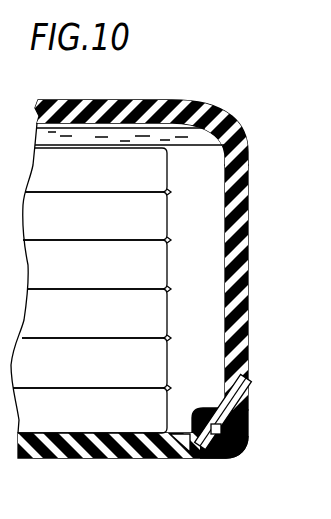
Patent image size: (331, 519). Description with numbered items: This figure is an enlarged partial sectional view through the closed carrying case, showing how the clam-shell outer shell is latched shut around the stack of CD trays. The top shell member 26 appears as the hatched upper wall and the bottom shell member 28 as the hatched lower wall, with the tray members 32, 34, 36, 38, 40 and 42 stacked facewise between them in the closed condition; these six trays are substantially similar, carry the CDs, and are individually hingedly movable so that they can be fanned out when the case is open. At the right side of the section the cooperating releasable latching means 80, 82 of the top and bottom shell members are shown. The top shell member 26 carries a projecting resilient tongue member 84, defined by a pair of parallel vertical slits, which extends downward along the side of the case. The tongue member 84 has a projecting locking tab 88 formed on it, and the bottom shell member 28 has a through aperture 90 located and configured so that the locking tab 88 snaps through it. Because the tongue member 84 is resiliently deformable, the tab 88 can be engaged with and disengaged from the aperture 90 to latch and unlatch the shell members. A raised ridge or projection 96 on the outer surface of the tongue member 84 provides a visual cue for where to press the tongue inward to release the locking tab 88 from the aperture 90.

The top shell member 26 is at (134, 98).
The bottom shell member 28 is at (68, 459).
The tray member 32 is at (82, 181).
The tray member 34 is at (83, 226).
The tray member 36 is at (83, 276).
The tray member 38 is at (83, 325).
The tray member 40 is at (83, 371).
The tray member 42 is at (83, 421).
The releasable latching means 80 is at (165, 259).
The releasable latching means 82 is at (256, 432).
The resilient tongue member 84 is at (242, 268).
The locking tab 88 is at (208, 460).
The through aperture 90 is at (187, 458).
The raised ridge 96 is at (255, 371).